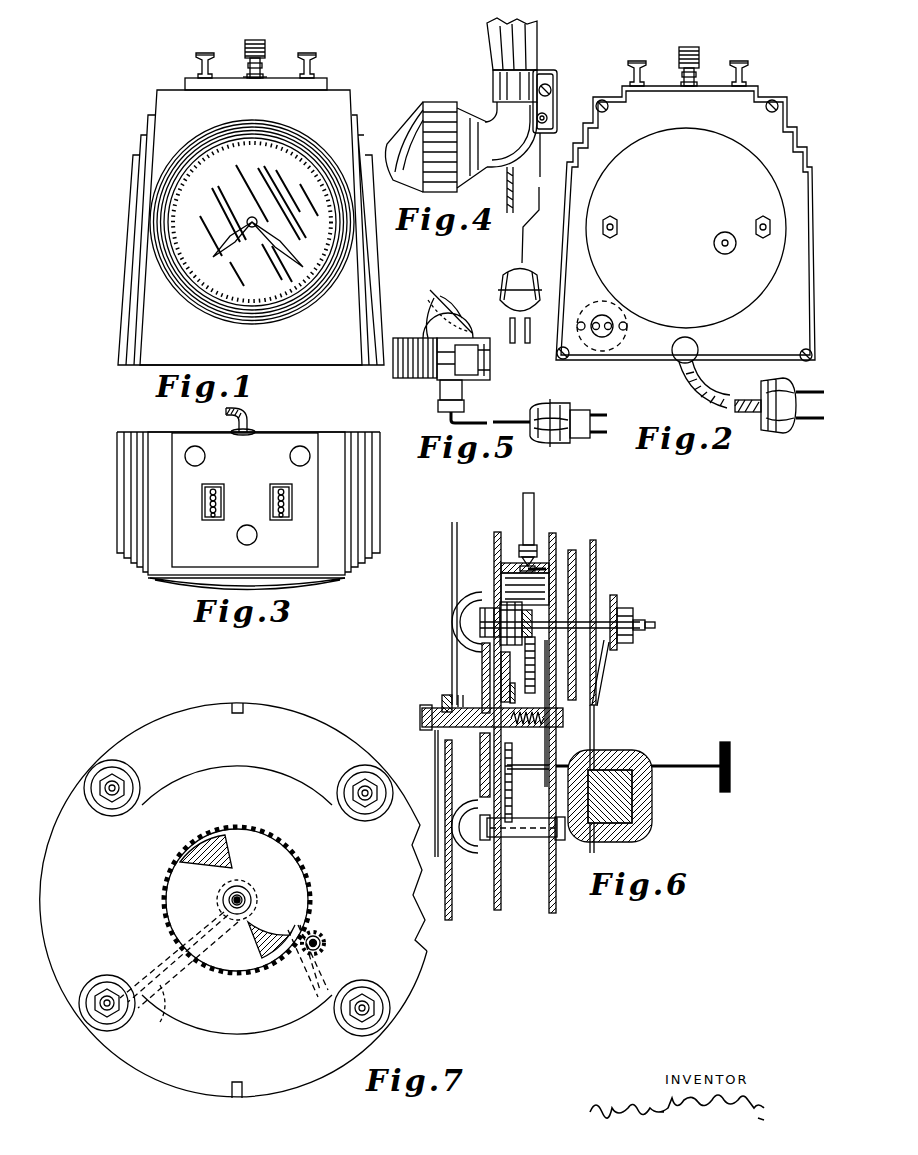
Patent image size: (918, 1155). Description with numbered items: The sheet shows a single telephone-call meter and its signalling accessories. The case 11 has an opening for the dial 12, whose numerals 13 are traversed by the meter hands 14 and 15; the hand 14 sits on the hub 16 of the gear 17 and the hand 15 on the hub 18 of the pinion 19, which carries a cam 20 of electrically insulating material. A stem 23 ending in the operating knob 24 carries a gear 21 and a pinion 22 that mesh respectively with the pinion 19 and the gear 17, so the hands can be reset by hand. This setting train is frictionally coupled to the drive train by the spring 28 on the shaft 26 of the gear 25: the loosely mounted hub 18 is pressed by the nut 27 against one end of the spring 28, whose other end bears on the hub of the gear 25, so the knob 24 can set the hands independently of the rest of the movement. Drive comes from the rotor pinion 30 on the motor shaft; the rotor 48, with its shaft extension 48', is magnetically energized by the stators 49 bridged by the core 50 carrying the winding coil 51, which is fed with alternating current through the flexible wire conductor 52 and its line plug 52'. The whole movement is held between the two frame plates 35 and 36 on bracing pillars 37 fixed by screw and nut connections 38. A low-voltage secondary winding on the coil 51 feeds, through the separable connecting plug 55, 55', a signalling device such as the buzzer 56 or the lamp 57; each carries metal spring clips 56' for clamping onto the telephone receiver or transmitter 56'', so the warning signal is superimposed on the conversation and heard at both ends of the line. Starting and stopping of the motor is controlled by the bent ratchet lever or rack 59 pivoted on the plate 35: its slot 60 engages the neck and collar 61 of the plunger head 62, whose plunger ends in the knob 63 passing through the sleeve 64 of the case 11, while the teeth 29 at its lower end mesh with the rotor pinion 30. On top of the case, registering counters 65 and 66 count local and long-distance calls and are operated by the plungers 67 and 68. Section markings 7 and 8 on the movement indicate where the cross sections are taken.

In FIG. 1, the case 11 is at (148, 333).
In FIG. 2, the case 11 is at (562, 350).
In FIG. 3, the case 11 is at (156, 580).
In FIG. 1, the dial 12 is at (197, 280).
In FIG. 3, the dial 12 is at (300, 584).
In FIG. 6, the dial 12 is at (452, 543).
In FIG. 7, the dial 12 is at (62, 962).
In FIG. 1, the numerals 13 is at (190, 256).
In FIG. 1, the meter hand 14 is at (232, 256).
In FIG. 6, the meter hand 14 is at (445, 813).
In FIG. 7, the meter hand 14 is at (300, 979).
In FIG. 1, the meter hand 15 is at (303, 264).
In FIG. 6, the meter hand 15 is at (436, 850).
In FIG. 7, the meter hand 15 is at (160, 1006).
In FIG. 6, the hub 16 is at (480, 700).
In FIG. 7, the hub 16 is at (262, 891).
In FIG. 6, the gear 17 is at (503, 677).
In FIG. 7, the gear 17 is at (306, 889).
In FIG. 6, the hub 18 is at (440, 708).
In FIG. 7, the hub 18 is at (241, 894).
In FIG. 6, the pinion 19 is at (486, 672).
In FIG. 6, the cam 20 is at (527, 660).
In FIG. 6, the gear 21 is at (512, 808).
In FIG. 6, the pinion 22 is at (480, 770).
In FIG. 7, the pinion 22 is at (323, 941).
In FIG. 6, the stem 23 is at (690, 770).
In FIG. 7, the stem 23 is at (317, 945).
In FIG. 2, the operating knob 24 is at (720, 248).
In FIG. 6, the operating knob 24 is at (730, 756).
In FIG. 6, the gear 25 is at (594, 740).
In FIG. 6, the shaft 26 is at (558, 743).
In FIG. 7, the shaft 26 is at (246, 900).
In FIG. 6, the nut 27 is at (422, 720).
In FIG. 6, the spring 28 is at (527, 730).
In FIG. 6, the teeth 29 is at (476, 618).
In FIG. 6, the rotor pinion 30 is at (505, 610).
In FIG. 6, the plate 35 is at (494, 545).
In FIG. 6, the plate 36 is at (556, 536).
In FIG. 6, the bracing pillar 37 is at (525, 837).
In FIG. 6, the screw and nut connection 38 is at (485, 840).
In FIG. 6, the rotor 48 is at (607, 625).
In FIG. 6, the shaft end 48' is at (582, 622).
In FIG. 6, the stators 49 is at (596, 548).
In FIG. 6, the core 50 is at (620, 840).
In FIG. 6, the winding coil 51 is at (652, 830).
In FIG. 2, the flexible wire conductor 52 is at (689, 373).
In FIG. 3, the flexible wire conductor 52 is at (256, 421).
In FIG. 2, the plug 52' is at (779, 420).
In FIG. 2, the connecting plug 55 is at (615, 326).
In FIG. 4, the connecting plug 55' is at (500, 304).
In FIG. 5, the connecting plug 55' is at (568, 417).
In FIG. 4, the buzzer 56 is at (486, 164).
In FIG. 4, the metal spring clips 56' is at (500, 86).
In FIG. 5, the metal spring clips 56' is at (454, 380).
In FIG. 4, the telephone receiver or transmitter 56'' is at (531, 44).
In FIG. 5, the lamp 57 is at (452, 316).
In FIG. 6, the bent ratchet lever or rack 59 is at (501, 567).
In FIG. 6, the slot 60 is at (523, 560).
In FIG. 6, the collar 61 is at (542, 567).
In FIG. 1, the plunger head 62 is at (262, 65).
In FIG. 6, the plunger head 62 is at (536, 566).
In FIG. 1, the knob 63 is at (266, 46).
In FIG. 2, the knob 63 is at (696, 50).
In FIG. 3, the knob 63 is at (244, 545).
In FIG. 1, the sleeve 64 is at (250, 74).
In FIG. 2, the sleeve 64 is at (683, 80).
In FIG. 3, the registering counter 65 is at (208, 520).
In FIG. 3, the registering counter 66 is at (290, 520).
In FIG. 1, the plunger 67 is at (196, 51).
In FIG. 2, the plunger 67 is at (747, 63).
In FIG. 3, the plunger 67 is at (205, 456).
In FIG. 1, the plunger 68 is at (318, 54).
In FIG. 2, the plunger 68 is at (644, 48).
In FIG. 3, the plunger 68 is at (290, 456).
In FIG. 6, the section line 7 is at (468, 517).
In FIG. 6, the section line 8 is at (543, 507).